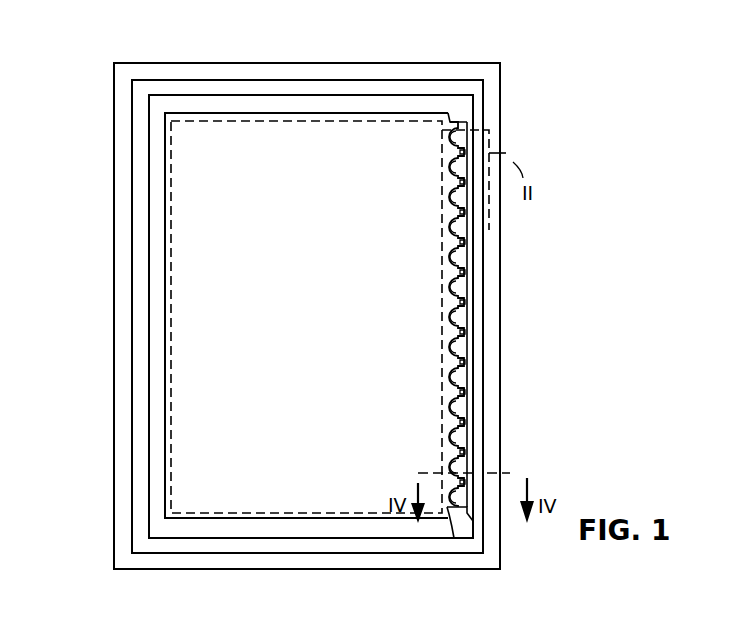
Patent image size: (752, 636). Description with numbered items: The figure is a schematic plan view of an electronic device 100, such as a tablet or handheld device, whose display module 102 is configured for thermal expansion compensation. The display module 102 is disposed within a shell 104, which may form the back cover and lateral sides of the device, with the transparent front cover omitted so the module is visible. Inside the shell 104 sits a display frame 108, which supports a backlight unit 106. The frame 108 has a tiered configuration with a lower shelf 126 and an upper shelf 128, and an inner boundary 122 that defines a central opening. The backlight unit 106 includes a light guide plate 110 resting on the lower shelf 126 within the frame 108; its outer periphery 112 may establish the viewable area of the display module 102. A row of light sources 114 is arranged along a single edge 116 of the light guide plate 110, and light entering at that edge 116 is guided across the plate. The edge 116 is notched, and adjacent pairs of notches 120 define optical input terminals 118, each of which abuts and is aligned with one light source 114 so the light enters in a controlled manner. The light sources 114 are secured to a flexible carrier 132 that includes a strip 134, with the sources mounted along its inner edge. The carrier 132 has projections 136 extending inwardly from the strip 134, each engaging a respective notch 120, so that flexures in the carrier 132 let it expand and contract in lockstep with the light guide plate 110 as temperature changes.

The electronic device 100 is at (530, 56).
The display module 102 is at (384, 77).
The shell 104 is at (491, 121).
The backlight unit 106 is at (457, 104).
The display frame 108 is at (295, 80).
The light guide plate 110 is at (326, 308).
The outer periphery 112 is at (166, 311).
The light sources 114 is at (460, 326).
The edge 116 is at (452, 513).
The optical input terminals 118 is at (450, 289).
The notches 120 is at (464, 245).
The inner boundary 122 is at (173, 269).
The lower shelf 126 is at (155, 237).
The upper shelf 128 is at (134, 200).
The flexible carrier 132 is at (466, 388).
The strip 134 is at (468, 515).
The projections 136 is at (460, 404).